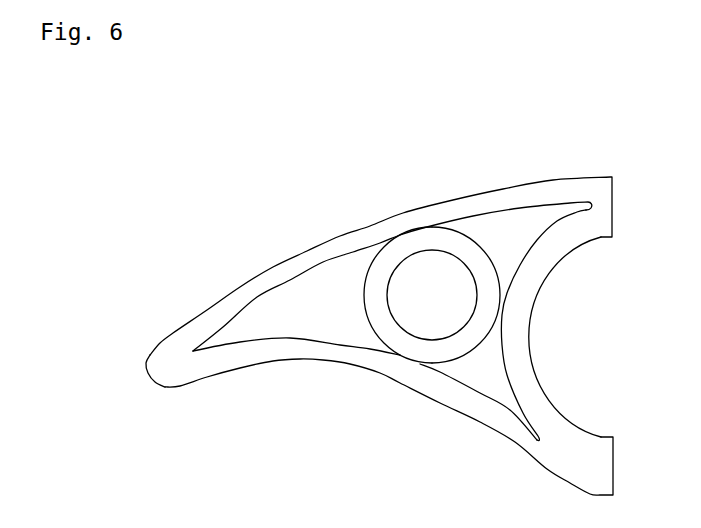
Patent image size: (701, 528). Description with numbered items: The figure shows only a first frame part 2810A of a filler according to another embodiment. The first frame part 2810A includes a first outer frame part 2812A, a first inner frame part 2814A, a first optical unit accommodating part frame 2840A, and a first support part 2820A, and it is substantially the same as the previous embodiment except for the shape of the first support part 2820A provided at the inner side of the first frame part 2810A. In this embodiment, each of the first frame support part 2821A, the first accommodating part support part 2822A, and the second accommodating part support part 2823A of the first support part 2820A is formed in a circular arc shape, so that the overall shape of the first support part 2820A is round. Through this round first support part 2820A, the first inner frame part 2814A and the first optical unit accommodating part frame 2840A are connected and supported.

The first frame part 2810A is at (293, 209).
The first outer frame part 2812A is at (542, 197).
The first inner frame part 2814A is at (290, 349).
The first support part 2820A is at (445, 135).
The first frame support part 2821A is at (383, 275).
The first accommodating part support part 2822A is at (475, 260).
The second accommodating part support part 2823A is at (452, 348).
The first optical unit accommodating part frame 2840A is at (519, 328).